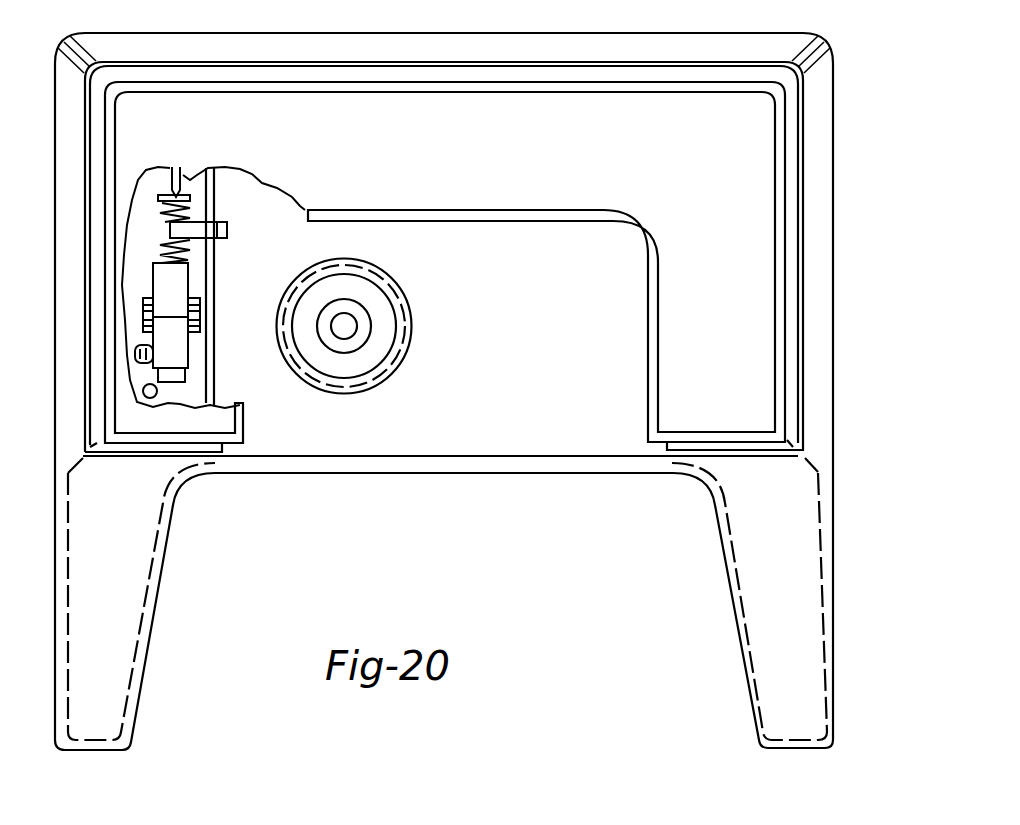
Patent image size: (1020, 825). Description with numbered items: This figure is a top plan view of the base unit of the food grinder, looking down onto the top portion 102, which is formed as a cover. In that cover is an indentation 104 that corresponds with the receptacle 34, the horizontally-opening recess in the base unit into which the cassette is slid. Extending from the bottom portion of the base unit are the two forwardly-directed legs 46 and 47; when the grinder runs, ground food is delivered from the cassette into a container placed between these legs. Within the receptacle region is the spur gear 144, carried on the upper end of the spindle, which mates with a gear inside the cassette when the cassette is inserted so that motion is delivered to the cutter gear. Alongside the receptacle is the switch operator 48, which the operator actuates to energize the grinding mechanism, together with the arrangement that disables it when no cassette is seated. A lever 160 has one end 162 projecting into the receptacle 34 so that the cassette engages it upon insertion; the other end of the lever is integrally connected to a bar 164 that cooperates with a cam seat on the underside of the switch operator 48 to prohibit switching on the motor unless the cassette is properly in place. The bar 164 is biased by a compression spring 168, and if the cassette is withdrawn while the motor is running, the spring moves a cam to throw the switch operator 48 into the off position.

The receptacle 34 is at (215, 322).
The forwardly-directed leg 46 is at (795, 578).
The forwardly-directed leg 47 is at (132, 573).
The switch operator 48 is at (177, 348).
The top portion 102 is at (735, 282).
The indentation 104 is at (645, 368).
The spur gear 144 is at (382, 322).
The lever 160 is at (193, 232).
The lever end 162 is at (228, 230).
The bar 164 is at (176, 198).
The compression spring 168 is at (183, 242).